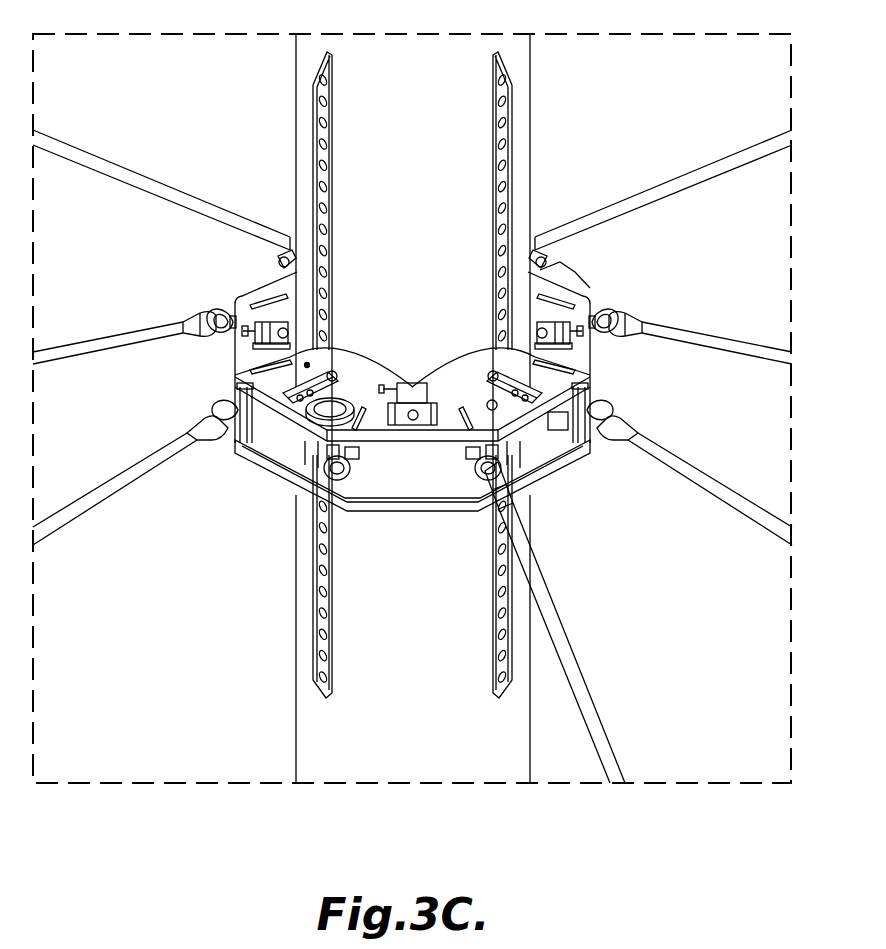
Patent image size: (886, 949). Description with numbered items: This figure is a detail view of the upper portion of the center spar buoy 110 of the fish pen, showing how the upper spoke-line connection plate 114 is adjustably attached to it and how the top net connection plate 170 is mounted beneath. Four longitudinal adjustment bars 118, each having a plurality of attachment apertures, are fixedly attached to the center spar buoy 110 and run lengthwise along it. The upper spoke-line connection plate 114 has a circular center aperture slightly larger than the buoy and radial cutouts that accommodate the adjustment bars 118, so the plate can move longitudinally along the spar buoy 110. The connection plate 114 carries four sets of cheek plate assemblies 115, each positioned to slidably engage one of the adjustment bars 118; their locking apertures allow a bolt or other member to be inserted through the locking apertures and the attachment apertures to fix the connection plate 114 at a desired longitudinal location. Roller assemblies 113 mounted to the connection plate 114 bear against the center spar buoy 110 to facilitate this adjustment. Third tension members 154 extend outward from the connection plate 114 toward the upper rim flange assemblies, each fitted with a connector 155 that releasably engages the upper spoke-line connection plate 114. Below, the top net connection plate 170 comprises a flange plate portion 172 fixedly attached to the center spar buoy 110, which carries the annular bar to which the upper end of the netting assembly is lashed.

The center spar buoy 110 is at (371, 160).
The roller assembly 113 is at (285, 295).
The upper spoke-line connection plate 114 is at (362, 503).
The cheek plate assembly 115 is at (263, 440).
The longitudinal adjustment bar 118 is at (313, 105).
The third tension member 154 is at (108, 335).
The connector 155 is at (215, 297).
The top net connection plate 170 is at (550, 482).
The flange plate portion 172 is at (445, 480).